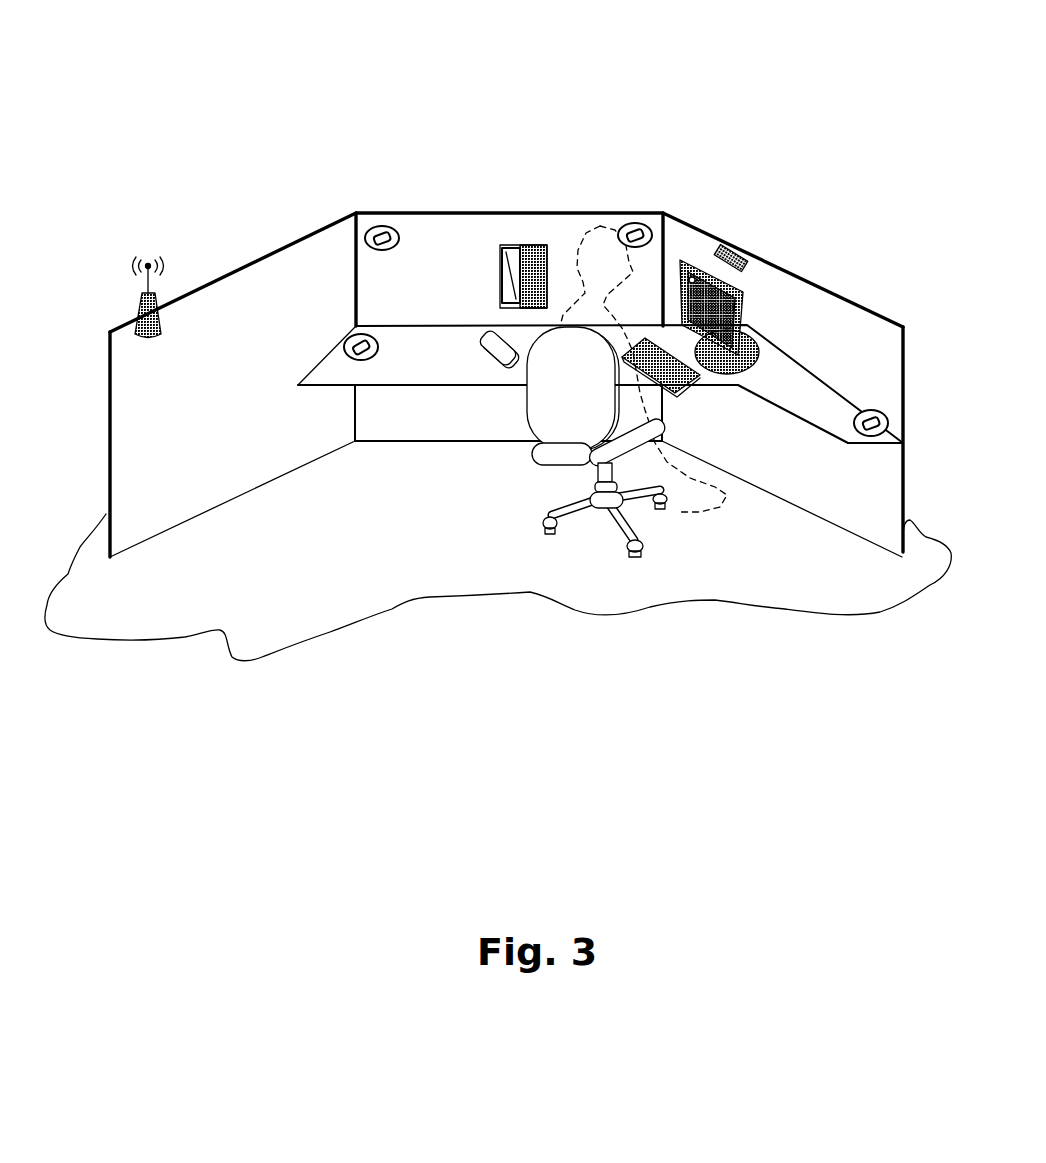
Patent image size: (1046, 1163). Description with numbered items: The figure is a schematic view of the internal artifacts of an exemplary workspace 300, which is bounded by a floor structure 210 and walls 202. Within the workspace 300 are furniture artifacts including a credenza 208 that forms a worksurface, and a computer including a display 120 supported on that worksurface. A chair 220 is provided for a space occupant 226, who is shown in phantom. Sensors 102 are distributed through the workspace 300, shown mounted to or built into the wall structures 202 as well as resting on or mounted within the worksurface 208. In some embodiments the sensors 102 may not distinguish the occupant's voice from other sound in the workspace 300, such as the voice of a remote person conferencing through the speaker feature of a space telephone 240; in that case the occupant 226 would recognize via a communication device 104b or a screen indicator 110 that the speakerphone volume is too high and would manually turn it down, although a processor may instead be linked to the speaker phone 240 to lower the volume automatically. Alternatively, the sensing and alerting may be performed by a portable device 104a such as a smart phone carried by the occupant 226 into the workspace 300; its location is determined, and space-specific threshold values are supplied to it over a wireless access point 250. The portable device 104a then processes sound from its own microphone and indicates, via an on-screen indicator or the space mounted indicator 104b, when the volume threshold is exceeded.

The workspace 300 is at (322, 112).
The walls 202 is at (187, 295).
The sensors 102 is at (353, 333).
The credenza 208 is at (462, 363).
The space telephone 240 is at (503, 243).
The space occupant 226 is at (607, 262).
The screen indicator 110 is at (692, 277).
The communication device 104b is at (735, 250).
The portable device 104a is at (492, 367).
The chair 220 is at (598, 492).
The display 120 is at (738, 477).
The floor structure 210 is at (252, 630).
The wireless access point 250 is at (137, 311).